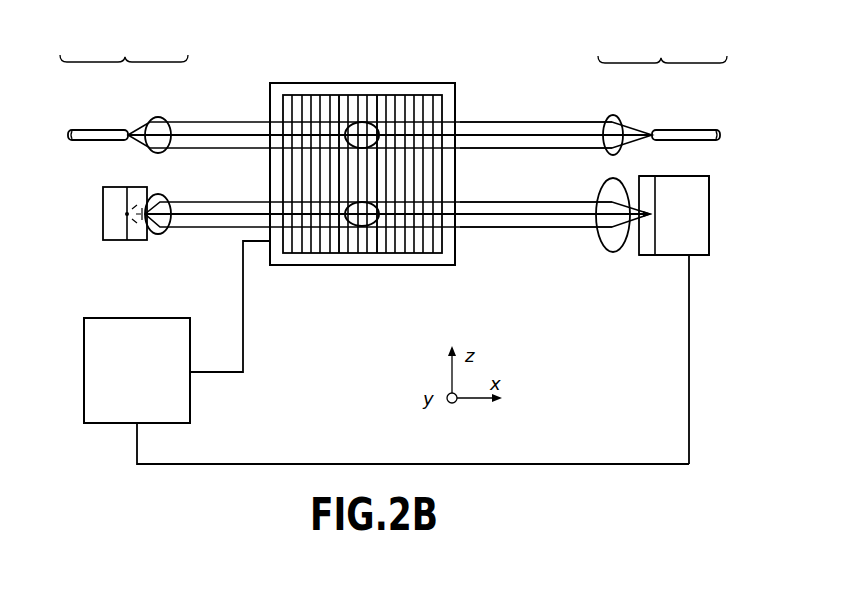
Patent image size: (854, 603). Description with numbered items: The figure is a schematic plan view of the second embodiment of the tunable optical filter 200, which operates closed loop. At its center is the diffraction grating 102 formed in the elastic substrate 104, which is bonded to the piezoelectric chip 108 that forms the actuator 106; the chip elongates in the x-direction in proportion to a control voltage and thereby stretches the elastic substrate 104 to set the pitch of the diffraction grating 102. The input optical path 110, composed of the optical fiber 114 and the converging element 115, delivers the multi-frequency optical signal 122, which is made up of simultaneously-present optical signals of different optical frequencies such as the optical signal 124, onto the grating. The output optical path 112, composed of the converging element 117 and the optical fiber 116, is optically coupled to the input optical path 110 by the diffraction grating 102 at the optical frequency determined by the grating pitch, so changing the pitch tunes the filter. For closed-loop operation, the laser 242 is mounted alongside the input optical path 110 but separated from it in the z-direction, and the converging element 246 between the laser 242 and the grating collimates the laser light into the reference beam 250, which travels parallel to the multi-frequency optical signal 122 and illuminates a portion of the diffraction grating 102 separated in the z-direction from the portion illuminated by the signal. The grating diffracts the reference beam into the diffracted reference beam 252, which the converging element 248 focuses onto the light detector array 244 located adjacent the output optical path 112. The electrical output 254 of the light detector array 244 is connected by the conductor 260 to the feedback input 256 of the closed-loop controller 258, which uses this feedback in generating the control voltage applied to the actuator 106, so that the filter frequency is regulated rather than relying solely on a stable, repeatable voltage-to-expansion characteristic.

The input optical path 110 is at (125, 58).
The output optical path 112 is at (661, 59).
The optical fiber 114 is at (95, 128).
The converging element 115 is at (157, 116).
The optical fiber 116 is at (692, 130).
The converging element 117 is at (613, 115).
The multi-frequency optical signal 122 is at (218, 133).
The optical signal 124 is at (526, 133).
The diffraction grating 102 is at (308, 246).
The elastic substrate 104 is at (342, 253).
The piezoelectric chip 108 is at (383, 263).
The actuator 106 is at (447, 272).
The laser 242 is at (122, 242).
The light detector array 244 is at (664, 256).
The converging element 246 is at (162, 236).
The converging element 248 is at (615, 252).
The reference beam 250 is at (209, 216).
The diffracted reference beam 252 is at (537, 216).
The electrical output 254 is at (703, 256).
The feedback input 256 is at (140, 425).
The closed-loop controller 258 is at (155, 384).
The conductor 260 is at (689, 383).
The tunable optical filter 200 is at (332, 422).